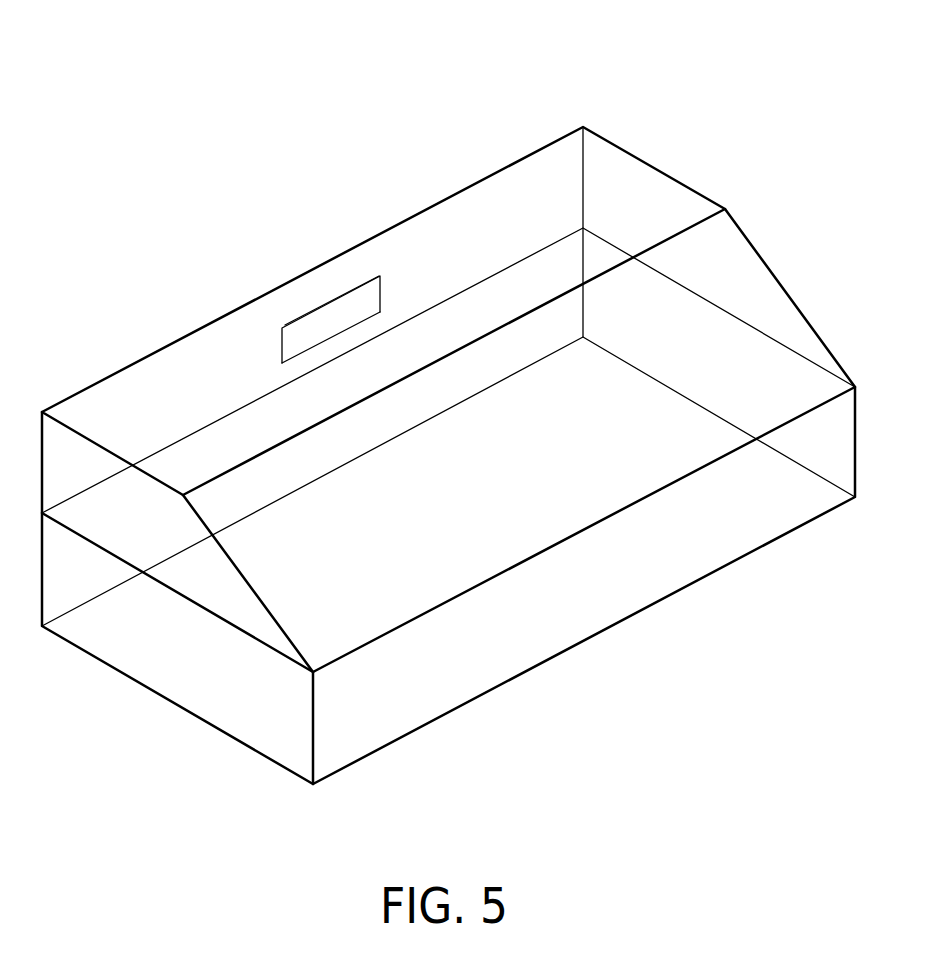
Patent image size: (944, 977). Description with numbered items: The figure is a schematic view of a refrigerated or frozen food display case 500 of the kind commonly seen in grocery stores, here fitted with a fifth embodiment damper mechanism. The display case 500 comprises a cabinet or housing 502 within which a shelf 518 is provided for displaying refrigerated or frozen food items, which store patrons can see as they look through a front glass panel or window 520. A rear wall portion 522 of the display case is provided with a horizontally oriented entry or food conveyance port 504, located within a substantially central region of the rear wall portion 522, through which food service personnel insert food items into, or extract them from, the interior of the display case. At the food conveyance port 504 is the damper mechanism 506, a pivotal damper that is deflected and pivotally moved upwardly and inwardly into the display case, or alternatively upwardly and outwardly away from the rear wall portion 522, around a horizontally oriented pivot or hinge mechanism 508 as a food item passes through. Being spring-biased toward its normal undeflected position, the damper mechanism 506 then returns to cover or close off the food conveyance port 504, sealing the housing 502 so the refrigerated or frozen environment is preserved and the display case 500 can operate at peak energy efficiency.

The refrigerated or frozen food display case 500 is at (449, 401).
The cabinet or housing 502 is at (570, 602).
The food conveyance port 504 is at (330, 338).
The damper mechanism 506 is at (358, 303).
The pivot or hinge mechanism 508 is at (300, 315).
The shelf 518 is at (192, 575).
The front glass panel or window 520 is at (470, 490).
The rear wall portion 522 is at (123, 411).